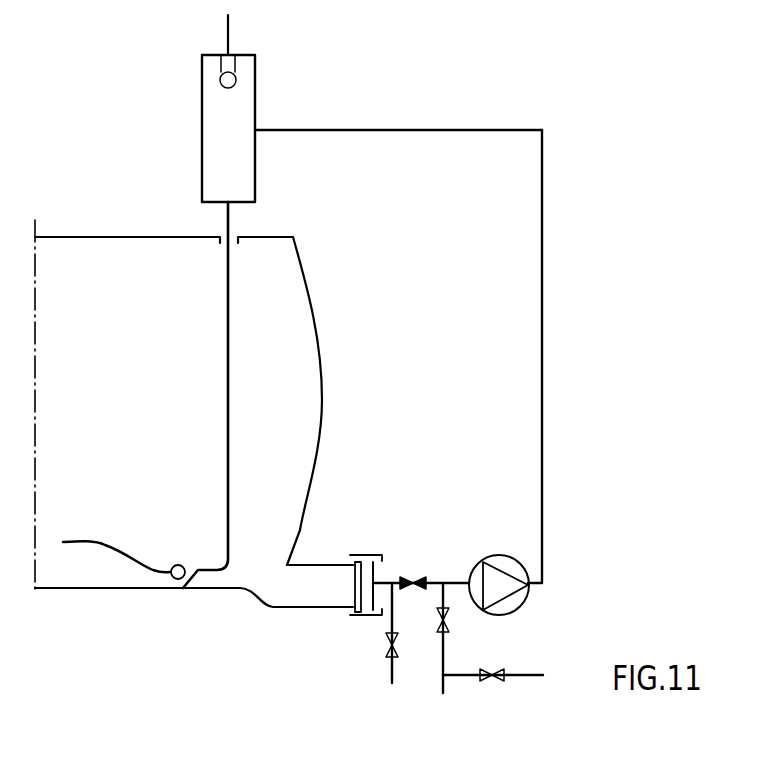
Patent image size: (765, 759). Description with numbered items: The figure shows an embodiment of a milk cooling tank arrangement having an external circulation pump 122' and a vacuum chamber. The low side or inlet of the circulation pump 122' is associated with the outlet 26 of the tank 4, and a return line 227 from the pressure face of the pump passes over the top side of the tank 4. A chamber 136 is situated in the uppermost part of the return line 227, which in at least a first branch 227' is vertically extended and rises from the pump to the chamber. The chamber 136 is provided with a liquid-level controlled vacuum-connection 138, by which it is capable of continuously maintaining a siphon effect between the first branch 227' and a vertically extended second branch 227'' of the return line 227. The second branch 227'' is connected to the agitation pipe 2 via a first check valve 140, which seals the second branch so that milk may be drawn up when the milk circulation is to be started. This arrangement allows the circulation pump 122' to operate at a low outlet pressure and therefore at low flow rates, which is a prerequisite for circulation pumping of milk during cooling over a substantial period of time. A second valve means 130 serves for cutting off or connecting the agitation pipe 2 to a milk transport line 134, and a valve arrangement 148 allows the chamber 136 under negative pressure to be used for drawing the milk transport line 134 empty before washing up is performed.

The agitation pipe 2 is at (89, 541).
The tank 4 is at (130, 236).
The outlet 26 is at (299, 609).
The external circulation pump 122' is at (504, 567).
The second valve means 130 is at (448, 622).
The milk transport line 134 is at (443, 692).
The chamber 136 is at (202, 103).
The liquid-level controlled vacuum-connection 138 is at (228, 25).
The first check valve 140 is at (181, 564).
The valve arrangement 148 is at (413, 576).
The return line 227 is at (398, 114).
The first branch 227' is at (565, 356).
The second branch 227'' is at (196, 395).